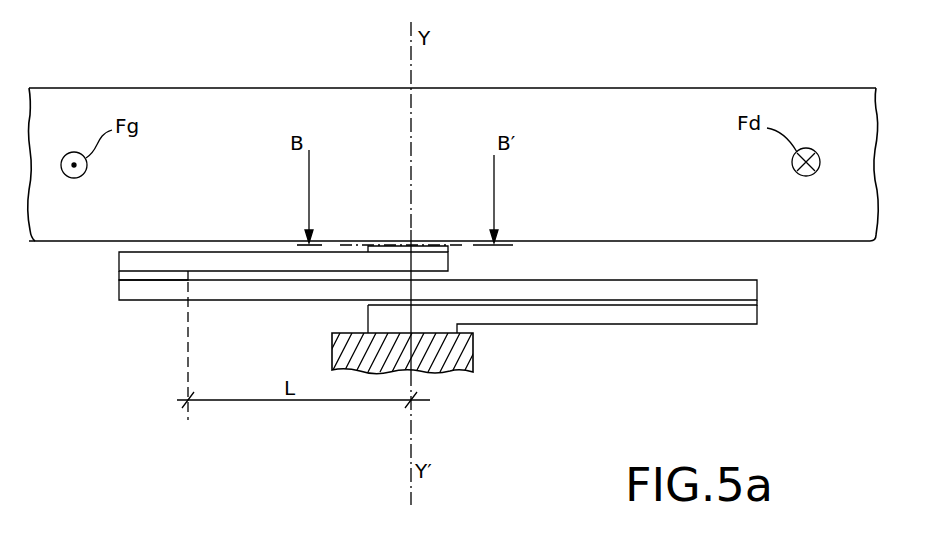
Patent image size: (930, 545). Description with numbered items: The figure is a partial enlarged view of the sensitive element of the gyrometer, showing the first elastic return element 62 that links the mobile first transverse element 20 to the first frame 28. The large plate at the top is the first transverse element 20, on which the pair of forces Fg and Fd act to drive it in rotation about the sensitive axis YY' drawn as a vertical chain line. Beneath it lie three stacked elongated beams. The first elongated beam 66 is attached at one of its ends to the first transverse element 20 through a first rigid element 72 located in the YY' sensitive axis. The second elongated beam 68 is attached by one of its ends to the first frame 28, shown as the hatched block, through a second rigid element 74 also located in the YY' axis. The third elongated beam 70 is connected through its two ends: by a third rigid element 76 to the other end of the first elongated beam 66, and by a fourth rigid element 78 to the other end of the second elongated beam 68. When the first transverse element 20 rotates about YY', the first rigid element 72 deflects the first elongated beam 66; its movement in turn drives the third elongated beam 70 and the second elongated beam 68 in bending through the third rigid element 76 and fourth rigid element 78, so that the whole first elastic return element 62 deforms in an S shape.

The first transverse element 20 is at (647, 108).
The first frame 28 is at (443, 353).
The first elastic return element 62 is at (578, 340).
The first elongated beam 66 is at (247, 262).
The second elongated beam 68 is at (727, 315).
The third elongated beam 70 is at (662, 290).
The first rigid element 72 is at (425, 250).
The second rigid element 74 is at (383, 319).
The third rigid element 76 is at (120, 277).
The fourth rigid element 78 is at (743, 302).